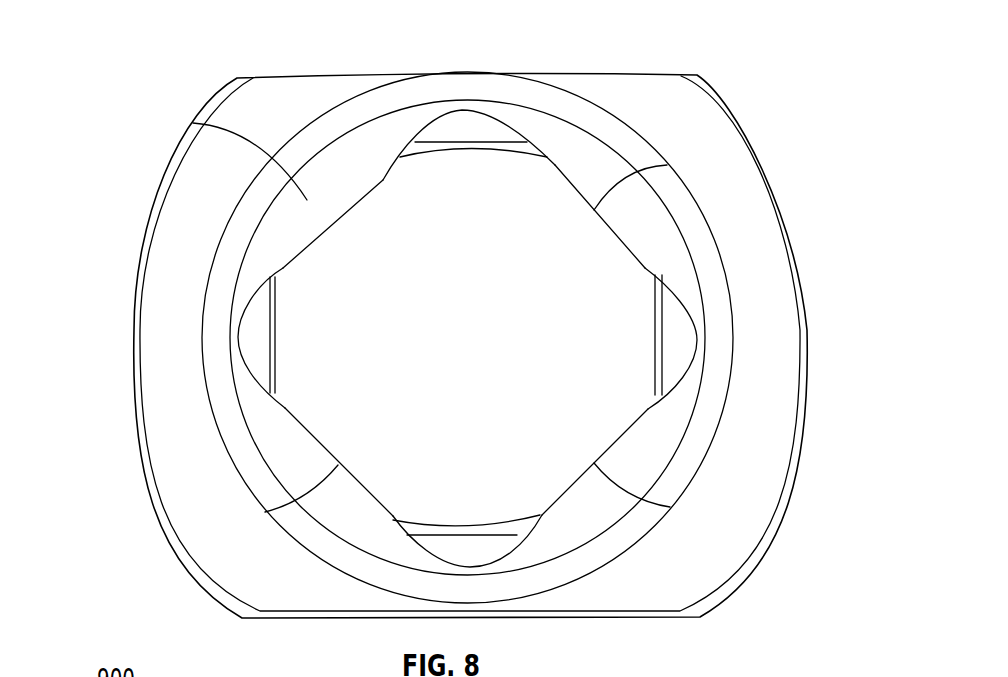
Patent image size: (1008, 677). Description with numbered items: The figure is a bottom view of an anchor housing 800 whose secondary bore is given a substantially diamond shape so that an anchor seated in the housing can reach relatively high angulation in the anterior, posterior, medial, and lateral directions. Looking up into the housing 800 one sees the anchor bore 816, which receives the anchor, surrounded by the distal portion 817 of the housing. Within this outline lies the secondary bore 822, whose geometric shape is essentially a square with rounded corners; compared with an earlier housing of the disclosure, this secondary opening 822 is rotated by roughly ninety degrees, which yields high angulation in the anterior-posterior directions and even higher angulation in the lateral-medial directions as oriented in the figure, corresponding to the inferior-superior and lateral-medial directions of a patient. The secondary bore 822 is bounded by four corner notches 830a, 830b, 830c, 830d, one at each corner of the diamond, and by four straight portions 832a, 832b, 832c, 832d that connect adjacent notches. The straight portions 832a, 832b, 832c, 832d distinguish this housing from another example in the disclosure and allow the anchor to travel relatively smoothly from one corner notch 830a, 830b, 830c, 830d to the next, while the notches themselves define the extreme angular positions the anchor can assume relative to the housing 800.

The anchor housing 800 is at (170, 31).
The distal portion 817 is at (183, 82).
The secondary bore 822 is at (280, 243).
The anchor bore 816 is at (295, 328).
The corner notch 830a is at (479, 130).
The corner notch 830b is at (677, 330).
The corner notch 830c is at (463, 553).
The corner notch 830d is at (253, 330).
The straight portion 832a is at (667, 165).
The straight portion 832b is at (670, 507).
The straight portion 832c is at (265, 512).
The straight portion 832d is at (193, 123).